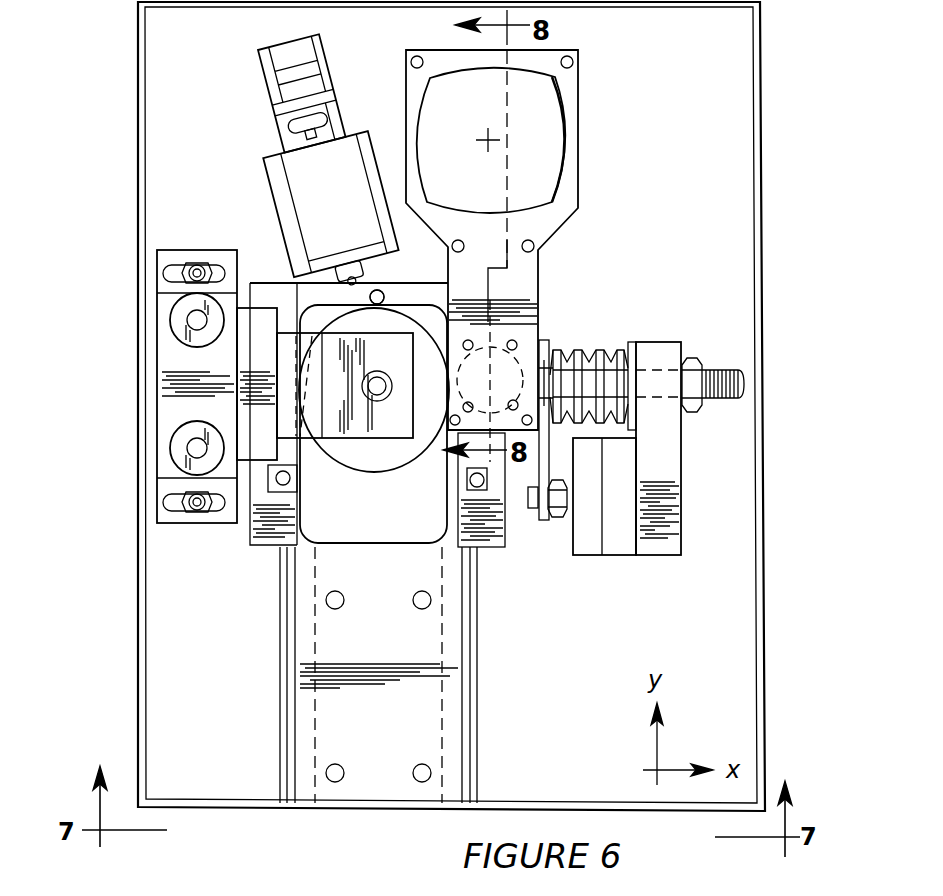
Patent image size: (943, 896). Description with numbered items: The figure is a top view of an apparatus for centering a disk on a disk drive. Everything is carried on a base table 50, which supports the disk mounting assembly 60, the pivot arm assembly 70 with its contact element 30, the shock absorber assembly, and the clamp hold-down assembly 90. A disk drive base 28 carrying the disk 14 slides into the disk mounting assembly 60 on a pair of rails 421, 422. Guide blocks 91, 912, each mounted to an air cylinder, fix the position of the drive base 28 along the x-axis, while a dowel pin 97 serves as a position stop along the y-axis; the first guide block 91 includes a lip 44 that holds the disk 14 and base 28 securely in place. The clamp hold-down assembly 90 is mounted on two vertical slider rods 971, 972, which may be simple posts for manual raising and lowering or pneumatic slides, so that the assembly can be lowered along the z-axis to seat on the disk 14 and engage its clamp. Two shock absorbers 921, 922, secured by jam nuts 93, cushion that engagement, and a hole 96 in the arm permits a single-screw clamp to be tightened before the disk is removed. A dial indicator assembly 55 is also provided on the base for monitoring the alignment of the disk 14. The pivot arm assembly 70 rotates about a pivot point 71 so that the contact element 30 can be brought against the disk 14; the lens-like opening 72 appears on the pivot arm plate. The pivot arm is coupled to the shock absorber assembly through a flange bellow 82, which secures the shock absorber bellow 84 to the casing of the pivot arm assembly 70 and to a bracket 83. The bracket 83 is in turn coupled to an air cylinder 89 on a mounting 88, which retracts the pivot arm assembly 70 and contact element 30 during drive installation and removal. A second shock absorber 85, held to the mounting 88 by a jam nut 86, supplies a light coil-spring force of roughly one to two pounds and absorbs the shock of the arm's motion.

The disk 14 is at (388, 317).
The disk drive base 28 is at (478, 548).
The contact element 30 is at (545, 282).
The rail 421 is at (268, 660).
The rail 422 is at (492, 678).
The lip 44 is at (310, 545).
The base table 50 is at (763, 720).
The dial indicator assembly 55 is at (262, 106).
The disk mounting assembly 60 is at (430, 725).
The pivot arm assembly 70 is at (580, 128).
The pivot point 71 is at (492, 138).
The lens edge 72 is at (578, 182).
The flange bellow 82 is at (545, 340).
The bracket 83 is at (547, 467).
The shock absorber bellow 84 is at (585, 348).
The shock absorber 85 is at (747, 384).
The jam nut 86 is at (718, 372).
The mounting 88 is at (672, 530).
The air cylinder 89 is at (612, 545).
The clamp hold-down assembly 90 is at (235, 403).
The guide block 91 is at (300, 538).
The guide block 912 is at (497, 537).
The shock absorber 921 is at (192, 267).
The shock absorber 922 is at (190, 507).
The jam nut 93 is at (200, 263).
The hole 96 is at (381, 412).
The dowel pin 97 is at (375, 290).
The vertical slider rod 971 is at (195, 320).
The vertical slider rod 972 is at (195, 448).